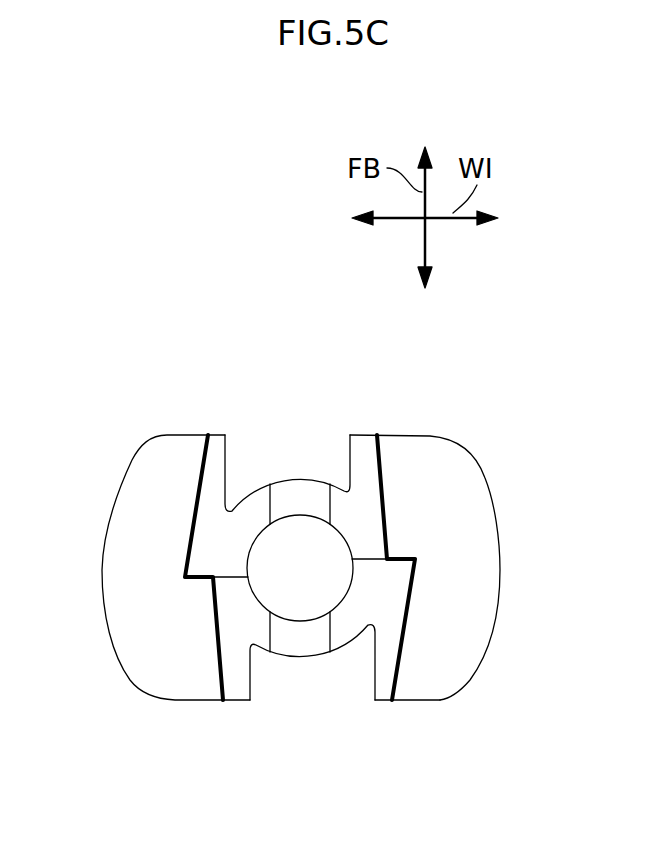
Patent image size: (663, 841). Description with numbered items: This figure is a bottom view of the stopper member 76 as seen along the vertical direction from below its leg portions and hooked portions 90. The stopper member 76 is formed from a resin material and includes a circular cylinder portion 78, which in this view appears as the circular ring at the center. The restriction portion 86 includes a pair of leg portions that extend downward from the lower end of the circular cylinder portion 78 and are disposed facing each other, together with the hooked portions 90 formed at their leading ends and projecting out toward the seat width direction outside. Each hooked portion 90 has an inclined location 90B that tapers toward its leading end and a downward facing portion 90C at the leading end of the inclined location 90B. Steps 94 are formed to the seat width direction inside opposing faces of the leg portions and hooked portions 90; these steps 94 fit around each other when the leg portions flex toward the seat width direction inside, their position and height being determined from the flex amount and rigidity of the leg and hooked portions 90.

The stopper member 76 is at (458, 400).
The circular cylinder portion 78 is at (292, 452).
The restriction portion 86 is at (432, 723).
The hooked portions 90 is at (485, 473).
The inclined location 90B is at (137, 507).
The downward facing portion 90C is at (400, 542).
The steps 94 is at (202, 572).